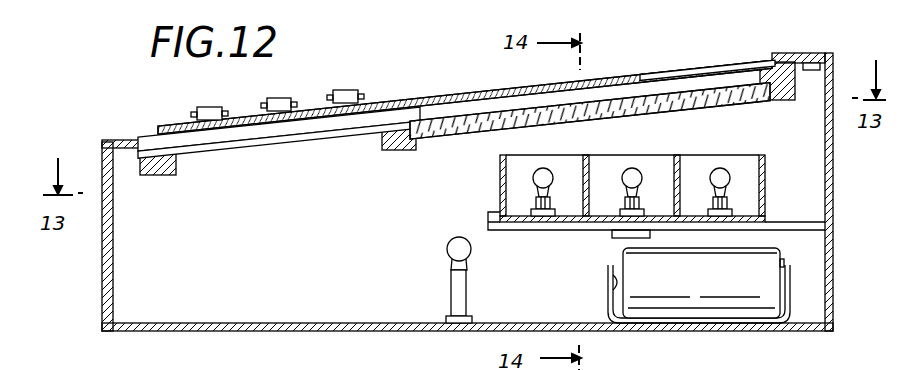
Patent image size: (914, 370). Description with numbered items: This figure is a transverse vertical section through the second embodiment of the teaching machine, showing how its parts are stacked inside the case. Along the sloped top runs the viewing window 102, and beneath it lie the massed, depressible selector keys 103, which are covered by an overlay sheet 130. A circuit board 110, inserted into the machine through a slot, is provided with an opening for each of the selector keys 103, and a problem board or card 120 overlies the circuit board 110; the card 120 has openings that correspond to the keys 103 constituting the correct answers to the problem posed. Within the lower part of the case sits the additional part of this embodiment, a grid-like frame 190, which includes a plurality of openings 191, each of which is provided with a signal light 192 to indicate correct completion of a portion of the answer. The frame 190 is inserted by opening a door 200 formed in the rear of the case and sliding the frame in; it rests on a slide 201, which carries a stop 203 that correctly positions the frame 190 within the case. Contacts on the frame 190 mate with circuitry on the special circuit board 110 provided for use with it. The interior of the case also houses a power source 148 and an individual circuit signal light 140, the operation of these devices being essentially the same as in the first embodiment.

The viewing window 102 is at (750, 44).
The depressible selector keys 103 is at (215, 107).
The circuit board 110 is at (252, 148).
The problem board or card 120 is at (462, 115).
The overlay sheet 130 is at (167, 126).
The individual circuit signal light 140 is at (455, 250).
The power source 148 is at (770, 313).
The grid-like frame 190 is at (770, 163).
The openings 191 is at (697, 160).
The signal light 192 is at (627, 157).
The door 200 is at (835, 272).
The slide 201 is at (530, 232).
The stops 203 is at (488, 222).